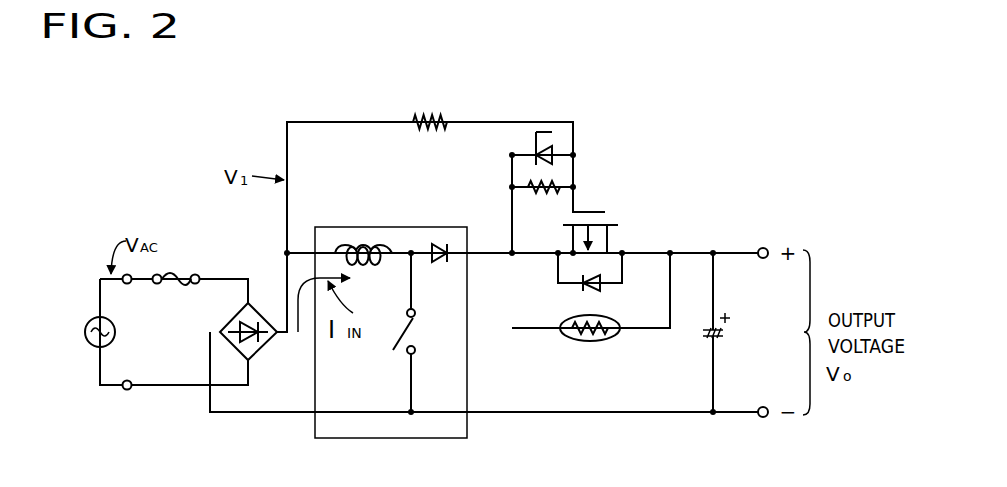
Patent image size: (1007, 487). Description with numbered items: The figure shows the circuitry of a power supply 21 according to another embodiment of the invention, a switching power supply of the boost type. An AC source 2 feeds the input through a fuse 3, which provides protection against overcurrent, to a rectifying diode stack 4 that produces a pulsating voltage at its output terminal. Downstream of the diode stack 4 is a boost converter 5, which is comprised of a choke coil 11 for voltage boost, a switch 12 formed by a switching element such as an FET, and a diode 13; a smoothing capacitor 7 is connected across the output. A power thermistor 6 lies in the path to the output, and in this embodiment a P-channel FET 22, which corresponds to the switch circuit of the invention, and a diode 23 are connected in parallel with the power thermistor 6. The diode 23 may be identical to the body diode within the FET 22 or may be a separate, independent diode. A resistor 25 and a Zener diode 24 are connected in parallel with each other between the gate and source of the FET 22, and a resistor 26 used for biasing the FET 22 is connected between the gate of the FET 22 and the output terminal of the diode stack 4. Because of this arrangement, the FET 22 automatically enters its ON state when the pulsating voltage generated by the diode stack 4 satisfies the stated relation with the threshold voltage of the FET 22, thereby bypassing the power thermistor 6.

The AC power source 2 is at (90, 320).
The fuse 3 is at (176, 273).
The diode stack 4 is at (263, 350).
The boost converter 5 is at (440, 227).
The power thermistor 6 is at (589, 342).
The smoothing capacitor 7 is at (707, 340).
The choke coil 11 is at (365, 264).
The switch 12 is at (408, 331).
The diode 13 is at (441, 264).
The power supply 21 is at (519, 106).
The P-channel FET 22 is at (598, 211).
The diode 23 is at (600, 290).
The Zener diode 24 is at (553, 152).
The resistor 25 is at (543, 194).
The resistor 26 is at (429, 130).